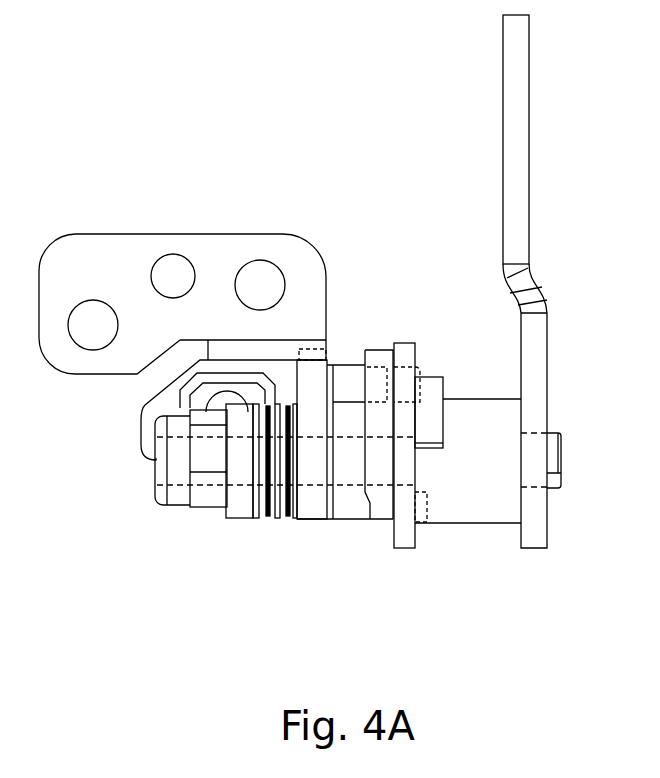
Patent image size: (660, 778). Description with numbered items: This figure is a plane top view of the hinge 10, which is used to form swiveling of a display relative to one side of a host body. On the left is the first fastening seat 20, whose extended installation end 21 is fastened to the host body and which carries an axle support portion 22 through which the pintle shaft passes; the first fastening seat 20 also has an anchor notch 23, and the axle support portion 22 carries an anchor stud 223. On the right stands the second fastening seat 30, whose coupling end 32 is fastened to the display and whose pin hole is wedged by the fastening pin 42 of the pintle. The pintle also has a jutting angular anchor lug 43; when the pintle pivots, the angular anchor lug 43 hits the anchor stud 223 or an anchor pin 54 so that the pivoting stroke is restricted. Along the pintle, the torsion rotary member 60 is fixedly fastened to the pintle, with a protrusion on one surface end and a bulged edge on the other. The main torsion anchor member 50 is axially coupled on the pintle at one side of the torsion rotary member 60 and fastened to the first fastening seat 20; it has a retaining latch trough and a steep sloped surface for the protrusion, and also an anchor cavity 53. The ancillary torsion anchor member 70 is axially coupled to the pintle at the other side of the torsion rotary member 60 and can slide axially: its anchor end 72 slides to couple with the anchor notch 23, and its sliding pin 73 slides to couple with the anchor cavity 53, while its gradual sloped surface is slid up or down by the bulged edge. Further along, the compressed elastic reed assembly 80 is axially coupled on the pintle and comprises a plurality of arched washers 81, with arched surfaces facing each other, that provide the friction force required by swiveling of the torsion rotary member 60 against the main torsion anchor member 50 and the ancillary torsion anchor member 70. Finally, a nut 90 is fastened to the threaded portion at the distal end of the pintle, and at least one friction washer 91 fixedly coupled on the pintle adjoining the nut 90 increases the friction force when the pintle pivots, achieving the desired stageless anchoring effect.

The hinge 10 is at (282, 142).
The first fastening seat 20 is at (199, 313).
The extended installation end 21 is at (128, 260).
The anchor notch 23 is at (300, 334).
The arched washers 81 is at (283, 400).
The compressed elastic reed assembly 80 is at (294, 384).
The nut 90 is at (181, 508).
The friction washer 91 is at (256, 522).
The ancillary torsion anchor member 70 is at (342, 440).
The anchor end 72 is at (312, 368).
The sliding pin 73 is at (345, 383).
The torsion rotary member 60 is at (382, 442).
The anchor cavity 53 is at (385, 367).
The anchor pin 54 is at (404, 383).
The main torsion anchor member 50 is at (412, 481).
The angular anchor lug 43 is at (433, 403).
The axle support portion 22 is at (462, 536).
The anchor stud 223 is at (427, 513).
The second fastening seat 30 is at (530, 281).
The coupling end 32 is at (508, 92).
The fastening pin 42 is at (562, 453).